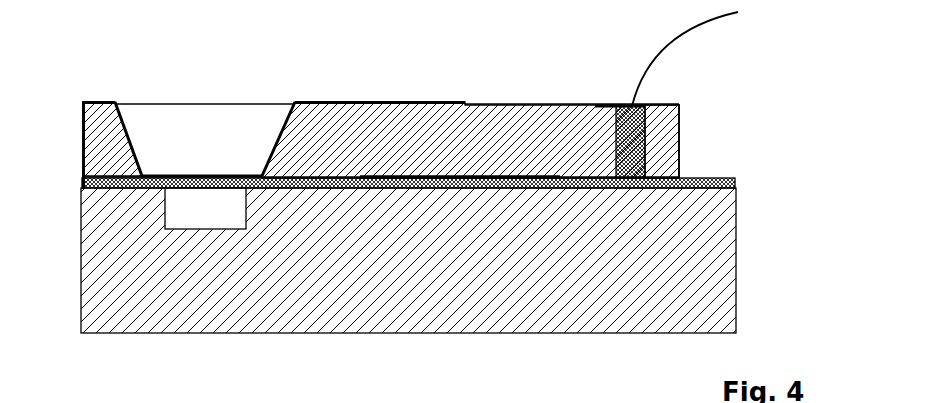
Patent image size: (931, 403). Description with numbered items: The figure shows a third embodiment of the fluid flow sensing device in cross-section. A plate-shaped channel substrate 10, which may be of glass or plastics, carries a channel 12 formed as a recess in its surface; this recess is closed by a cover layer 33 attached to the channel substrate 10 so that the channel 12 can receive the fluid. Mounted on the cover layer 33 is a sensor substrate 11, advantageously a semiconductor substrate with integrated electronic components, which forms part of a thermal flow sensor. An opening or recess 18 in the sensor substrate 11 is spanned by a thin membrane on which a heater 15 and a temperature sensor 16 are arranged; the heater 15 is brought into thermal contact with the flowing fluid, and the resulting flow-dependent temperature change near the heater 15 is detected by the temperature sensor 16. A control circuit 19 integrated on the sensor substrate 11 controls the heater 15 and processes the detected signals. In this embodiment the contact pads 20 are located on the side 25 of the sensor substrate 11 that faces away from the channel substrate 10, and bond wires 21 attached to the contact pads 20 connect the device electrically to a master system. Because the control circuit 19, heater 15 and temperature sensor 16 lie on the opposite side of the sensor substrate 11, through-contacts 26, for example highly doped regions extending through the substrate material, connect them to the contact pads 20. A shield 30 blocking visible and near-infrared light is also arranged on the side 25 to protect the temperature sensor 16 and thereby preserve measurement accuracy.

The channel substrate 10 is at (414, 333).
The sensor substrate 11 is at (403, 118).
The channel 12 is at (209, 226).
The heater 15 is at (179, 173).
The temperature sensor 16 is at (229, 173).
The opening or recess in sensor substrate 18 is at (221, 147).
The control circuit 19 is at (381, 175).
The contact pads 20 is at (598, 106).
The bond wires 21 is at (655, 52).
The side of sensor substrate facing away from channel substrate 25 is at (485, 105).
The through-contacts 26 is at (648, 150).
The shield 30 is at (105, 101).
The cover layer 33 is at (82, 203).